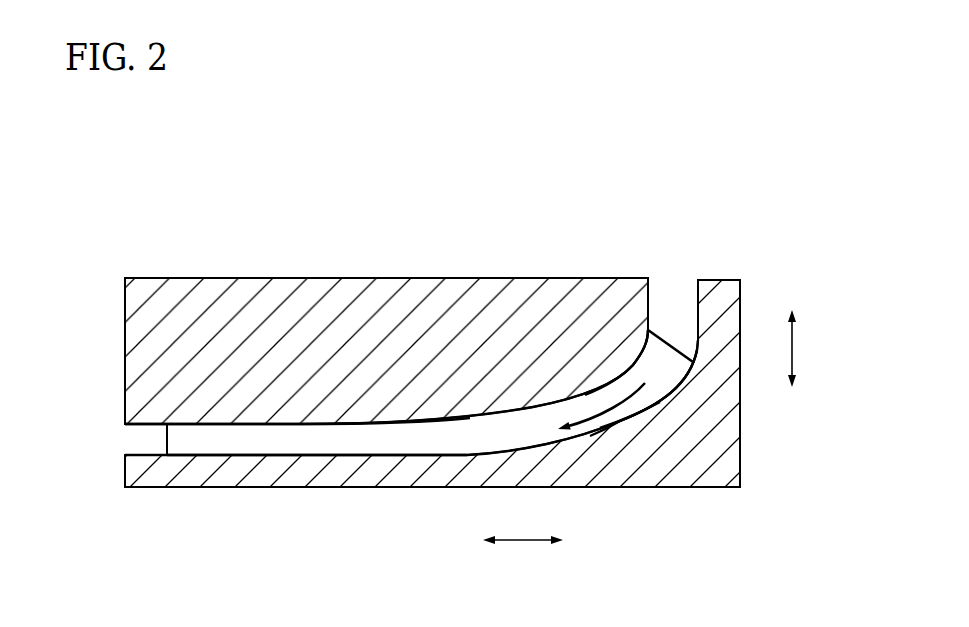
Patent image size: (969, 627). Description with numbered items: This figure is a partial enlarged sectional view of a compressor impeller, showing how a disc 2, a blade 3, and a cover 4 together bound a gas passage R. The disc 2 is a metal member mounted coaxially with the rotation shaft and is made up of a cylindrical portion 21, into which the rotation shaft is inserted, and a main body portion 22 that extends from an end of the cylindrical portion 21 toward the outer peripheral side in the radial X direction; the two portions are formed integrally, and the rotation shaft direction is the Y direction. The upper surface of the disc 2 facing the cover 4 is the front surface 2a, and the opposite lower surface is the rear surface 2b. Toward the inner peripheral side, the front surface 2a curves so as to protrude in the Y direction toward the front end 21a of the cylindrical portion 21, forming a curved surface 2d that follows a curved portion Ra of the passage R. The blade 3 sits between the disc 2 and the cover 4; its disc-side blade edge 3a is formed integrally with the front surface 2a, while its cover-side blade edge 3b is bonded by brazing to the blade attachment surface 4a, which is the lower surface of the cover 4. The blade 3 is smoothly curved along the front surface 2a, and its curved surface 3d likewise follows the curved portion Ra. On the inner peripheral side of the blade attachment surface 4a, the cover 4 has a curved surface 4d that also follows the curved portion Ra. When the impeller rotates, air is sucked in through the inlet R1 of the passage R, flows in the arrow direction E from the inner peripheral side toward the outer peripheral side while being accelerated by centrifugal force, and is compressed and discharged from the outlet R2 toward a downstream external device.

The disc 2 is at (745, 277).
The front surface 2a is at (392, 457).
The rear surface 2b is at (308, 487).
The curved surface 2d is at (635, 420).
The blade 3 is at (523, 428).
The disc-side blade edge 3a is at (545, 450).
The cover-side blade edge 3b is at (400, 420).
The curved surface 3d is at (670, 400).
The cover 4 is at (400, 290).
The blade attachment surface 4a is at (332, 424).
The curved surface 4d is at (607, 382).
The cylindrical portion 21 is at (730, 297).
The front end 21a is at (712, 280).
The main body portion 22 is at (447, 475).
The passage R is at (130, 441).
The inlet R1 is at (672, 307).
The outlet R2 is at (123, 447).
The curved portion Ra is at (612, 440).
The arrow direction E is at (635, 422).
The X direction X is at (523, 554).
The Y direction Y is at (799, 348).